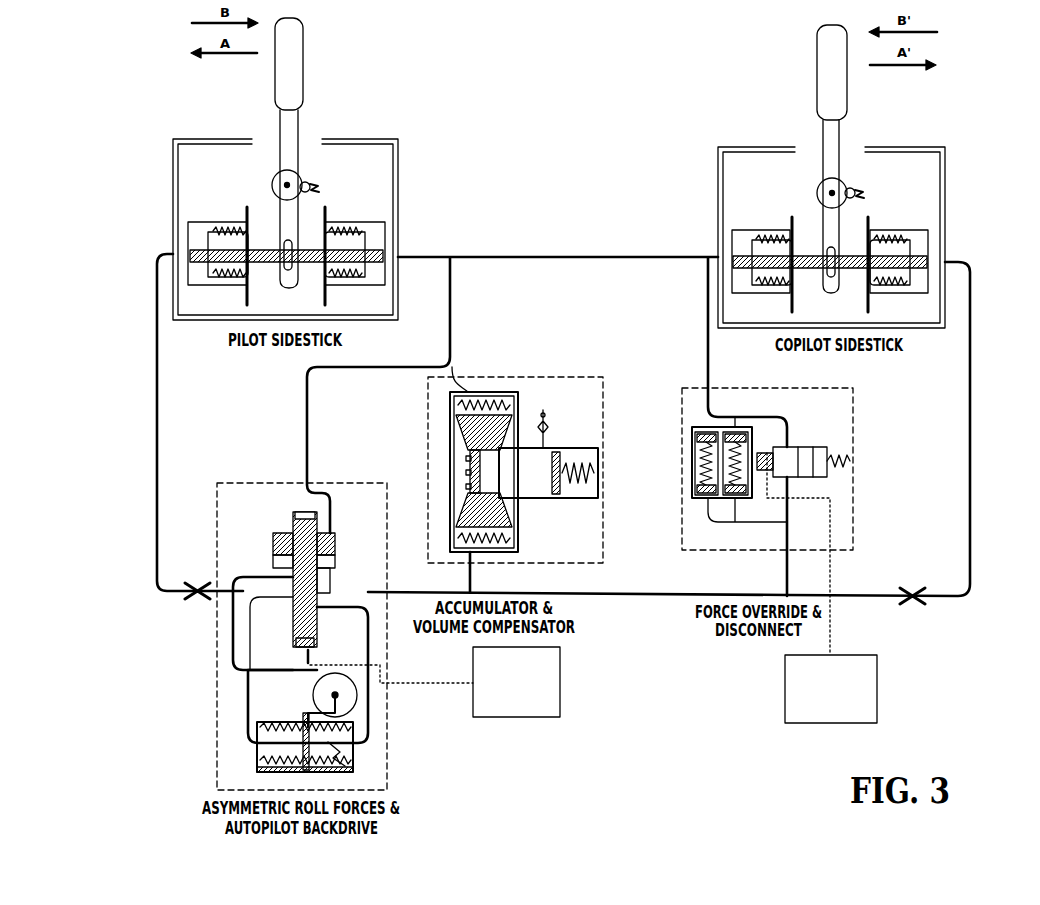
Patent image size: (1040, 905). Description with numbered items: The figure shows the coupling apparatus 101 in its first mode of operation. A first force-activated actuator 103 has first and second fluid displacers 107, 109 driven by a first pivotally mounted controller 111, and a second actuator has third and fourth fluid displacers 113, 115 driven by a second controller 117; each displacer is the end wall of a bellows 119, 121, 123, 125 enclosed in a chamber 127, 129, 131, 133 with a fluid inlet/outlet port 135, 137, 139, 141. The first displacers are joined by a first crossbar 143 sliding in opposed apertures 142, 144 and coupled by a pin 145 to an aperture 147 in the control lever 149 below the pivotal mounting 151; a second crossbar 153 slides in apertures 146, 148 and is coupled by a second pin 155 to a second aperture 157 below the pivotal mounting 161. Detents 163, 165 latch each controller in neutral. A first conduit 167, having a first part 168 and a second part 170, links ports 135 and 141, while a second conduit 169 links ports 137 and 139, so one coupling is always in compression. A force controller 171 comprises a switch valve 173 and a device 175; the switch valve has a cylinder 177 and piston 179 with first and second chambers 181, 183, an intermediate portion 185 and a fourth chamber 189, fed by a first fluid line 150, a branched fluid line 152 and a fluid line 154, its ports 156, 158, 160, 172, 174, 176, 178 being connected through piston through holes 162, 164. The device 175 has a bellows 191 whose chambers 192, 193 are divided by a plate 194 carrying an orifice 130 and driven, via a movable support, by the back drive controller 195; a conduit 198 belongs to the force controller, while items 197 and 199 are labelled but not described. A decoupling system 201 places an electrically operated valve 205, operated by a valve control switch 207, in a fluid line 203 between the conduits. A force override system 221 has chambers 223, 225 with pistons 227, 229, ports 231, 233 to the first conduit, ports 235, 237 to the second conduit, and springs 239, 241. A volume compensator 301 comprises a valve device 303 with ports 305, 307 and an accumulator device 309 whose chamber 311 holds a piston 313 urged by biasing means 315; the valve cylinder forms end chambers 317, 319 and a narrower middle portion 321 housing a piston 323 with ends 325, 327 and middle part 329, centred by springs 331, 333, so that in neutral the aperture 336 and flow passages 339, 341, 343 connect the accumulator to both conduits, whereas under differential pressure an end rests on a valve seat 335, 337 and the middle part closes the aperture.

The coupling apparatus 101 is at (494, 170).
The first force-activated actuator 103 is at (377, 140).
The first fluid displacer 107 is at (200, 248).
The second fluid displacer 109 is at (398, 250).
The first pivotally mounted controller 111 is at (300, 44).
The third fluid displacer 113 is at (718, 257).
The fourth fluid displacer 115 is at (945, 257).
The second pivotally mounted controller 117 is at (822, 60).
The first bellows 119 is at (210, 230).
The second bellows 121 is at (350, 230).
The third bellows 123 is at (758, 238).
The fourth bellows 125 is at (900, 238).
The first chamber 127 is at (205, 290).
The second chamber 129 is at (370, 290).
The orifice 130 is at (222, 790).
The third chamber 131 is at (752, 296).
The fourth chamber 133 is at (912, 296).
The fluid inlet/outlet port 135 is at (160, 253).
The fluid inlet/outlet port 137 is at (400, 257).
The fluid inlet/outlet port 139 is at (718, 261).
The fluid inlet/outlet port 141 is at (962, 262).
The aperture 142 is at (250, 276).
The first crossbar 143 is at (262, 240).
The aperture 144 is at (320, 275).
The pin 145 is at (294, 240).
The third aperture 146 is at (796, 282).
The aperture 147 is at (292, 272).
The fourth aperture 148 is at (866, 282).
The control lever 149 is at (284, 136).
The first fluid line 150 is at (307, 428).
The pivotal mounting 151 is at (289, 182).
The branched fluid line 152 is at (233, 640).
The second crossbar 153 is at (805, 245).
The fluid line 154 is at (336, 560).
The second pin 155 is at (840, 248).
The first fluid inlet/outlet port 156 is at (255, 581).
The second aperture 157 is at (838, 280).
The second fluid inlet/outlet port 158 is at (277, 590).
The third fluid inlet/outlet port 160 is at (262, 607).
The pivotal mounting 161 is at (834, 190).
The first through hole 162 is at (265, 585).
The first detent 163 is at (304, 181).
The second through hole 164 is at (290, 632).
The second detent 165 is at (849, 188).
The first conduit 167 is at (157, 447).
The first part of the first conduit 168 is at (157, 498).
The second conduit 169 is at (542, 257).
The second part of the first conduit 170 is at (673, 600).
The force controller 171 is at (248, 730).
The fourth fluid inlet/outlet port 172 is at (334, 576).
The switch valve 173 is at (272, 536).
The fifth fluid inlet/outlet port 174 is at (331, 593).
The device for introducing an additional opposing force 175 is at (350, 745).
The sixth fluid inlet/outlet port 176 is at (368, 620).
The cylinder 177 is at (325, 545).
The seventh fluid inlet/outlet port 178 is at (368, 640).
The piston 179 is at (322, 533).
The first chamber 181 is at (298, 512).
The second chamber 183 is at (340, 663).
The intermediate portion 185 is at (273, 546).
The fourth chamber 189 is at (273, 560).
The bellows 191 is at (345, 760).
The first bellows chamber 192 is at (262, 750).
The second bellows chamber 193 is at (352, 735).
The partition plate 194 is at (330, 775).
The back drive controller 195 is at (560, 698).
The drive rod 197 is at (345, 680).
The conduit of the force controller 198 is at (350, 700).
The spring 199 is at (250, 700).
The decoupling system 201 is at (860, 446).
The fluid line 203 is at (772, 412).
The electrically operated valve 205 is at (812, 447).
The valve control switch 207 is at (877, 702).
The force override system 221 is at (706, 428).
The first chamber 223 is at (700, 500).
The second chamber 225 is at (735, 440).
The first piston 227 is at (702, 435).
The second piston 229 is at (770, 500).
The first fluid inlet/outlet port 231 is at (725, 522).
The first fluid inlet/outlet port 233 is at (758, 523).
The second fluid inlet/outlet port 235 is at (720, 427).
The second fluid inlet/outlet port 237 is at (746, 425).
The spring 239 is at (698, 470).
The spring 241 is at (742, 470).
The volume compensator 301 is at (580, 377).
The valve device 303 is at (458, 420).
The first inlet/outlet port 305 is at (474, 558).
The second inlet/outlet port 307 is at (466, 372).
The accumulator device 309 is at (543, 420).
The accumulator chamber 311 is at (525, 496).
The piston 313 is at (557, 452).
The biasing means 315 is at (462, 432).
The end chamber 317 is at (460, 548).
The end chamber 319 is at (482, 398).
The narrower middle portion 321 is at (470, 486).
The piston 323 is at (518, 512).
The piston end 325 is at (515, 440).
The piston end 327 is at (514, 530).
The middle part 329 is at (470, 462).
The first biasing means 331 is at (512, 548).
The second biasing means 333 is at (505, 410).
The valve seat 335 is at (462, 500).
The aperture 336 is at (510, 484).
The valve seat 337 is at (468, 452).
The piston flow passage 339 is at (452, 396).
The piston flow passage 341 is at (470, 474).
The piston flow passage 343 is at (462, 528).